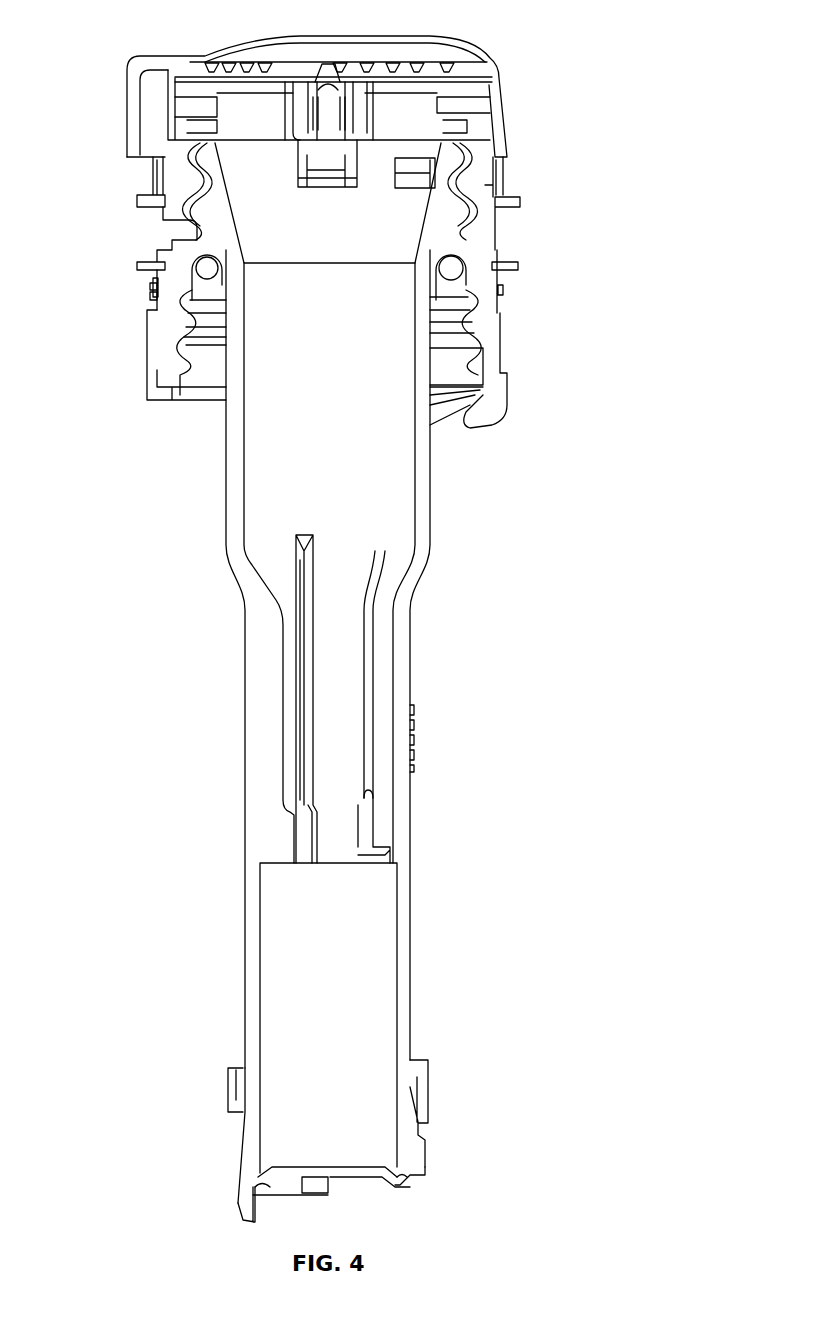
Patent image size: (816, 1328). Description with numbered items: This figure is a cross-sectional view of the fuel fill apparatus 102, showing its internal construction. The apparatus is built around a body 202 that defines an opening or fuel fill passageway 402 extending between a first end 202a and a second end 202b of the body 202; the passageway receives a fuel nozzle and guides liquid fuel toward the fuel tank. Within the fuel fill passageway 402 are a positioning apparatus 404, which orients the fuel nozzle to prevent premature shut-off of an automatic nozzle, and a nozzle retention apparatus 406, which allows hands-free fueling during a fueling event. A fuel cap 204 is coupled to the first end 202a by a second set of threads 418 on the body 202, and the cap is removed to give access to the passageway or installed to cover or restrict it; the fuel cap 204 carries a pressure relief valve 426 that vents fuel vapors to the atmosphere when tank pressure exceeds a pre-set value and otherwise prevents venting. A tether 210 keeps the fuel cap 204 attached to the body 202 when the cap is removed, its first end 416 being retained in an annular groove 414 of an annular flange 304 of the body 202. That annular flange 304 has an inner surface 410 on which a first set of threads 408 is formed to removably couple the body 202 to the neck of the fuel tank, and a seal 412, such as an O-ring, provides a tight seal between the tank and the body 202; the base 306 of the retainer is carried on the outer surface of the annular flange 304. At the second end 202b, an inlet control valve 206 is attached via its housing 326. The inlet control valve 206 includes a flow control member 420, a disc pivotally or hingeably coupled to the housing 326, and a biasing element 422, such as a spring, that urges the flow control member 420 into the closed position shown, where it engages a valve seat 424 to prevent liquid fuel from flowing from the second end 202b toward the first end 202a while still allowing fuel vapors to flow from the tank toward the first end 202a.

The fuel fill apparatus 102 is at (583, 100).
The body 202 is at (398, 682).
The first end 202a is at (200, 143).
The second end 202b is at (253, 1128).
The fuel cap 204 is at (495, 73).
The inlet control valve 206 is at (235, 1165).
The tether 210 is at (490, 197).
The annular flange 304 is at (160, 295).
The base 306 is at (157, 282).
The housing 326 is at (420, 1075).
The fuel fill passageway 402 is at (270, 511).
The positioning apparatus 404 is at (277, 733).
The nozzle retention apparatus 406 is at (417, 167).
The first set of threads 408 is at (463, 333).
The inner surface 410 is at (172, 370).
The seal 412 is at (452, 268).
The annular groove 414 is at (165, 265).
The first end of the tether 416 is at (517, 203).
The second set of threads 418 is at (186, 178).
The flow control member 420 is at (350, 1172).
The biasing element 422 is at (240, 1208).
The valve seat 424 is at (402, 1178).
The pressure relief valve 426 is at (353, 84).